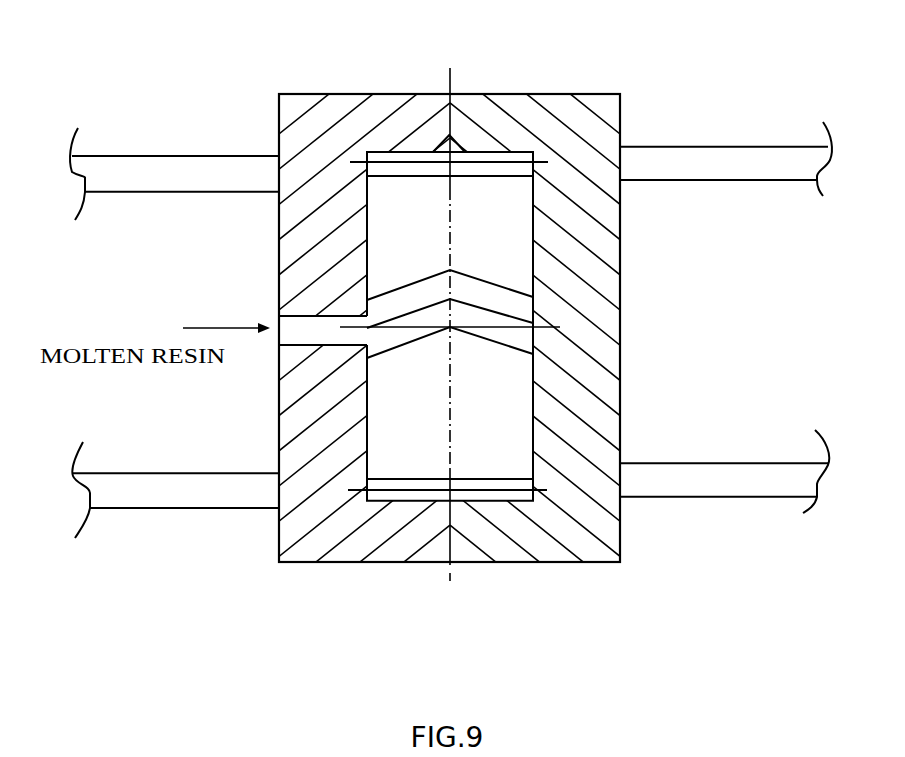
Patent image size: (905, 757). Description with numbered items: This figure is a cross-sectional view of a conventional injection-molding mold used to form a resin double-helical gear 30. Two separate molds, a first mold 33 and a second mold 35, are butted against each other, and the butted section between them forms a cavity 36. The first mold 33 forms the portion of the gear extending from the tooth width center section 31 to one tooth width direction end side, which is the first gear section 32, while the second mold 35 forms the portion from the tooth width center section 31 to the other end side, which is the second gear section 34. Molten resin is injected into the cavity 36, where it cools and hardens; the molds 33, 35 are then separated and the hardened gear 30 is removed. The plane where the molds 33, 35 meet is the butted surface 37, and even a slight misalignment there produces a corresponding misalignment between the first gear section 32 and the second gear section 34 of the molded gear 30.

The resin double-helical gear 30 is at (492, 182).
The tooth width center section 31 is at (452, 76).
The first gear section 32 is at (403, 502).
The first mold 33 is at (279, 565).
The second gear section 34 is at (503, 480).
The second mold 35 is at (587, 545).
The cavity 36 is at (533, 390).
The butted surface 37 is at (452, 469).